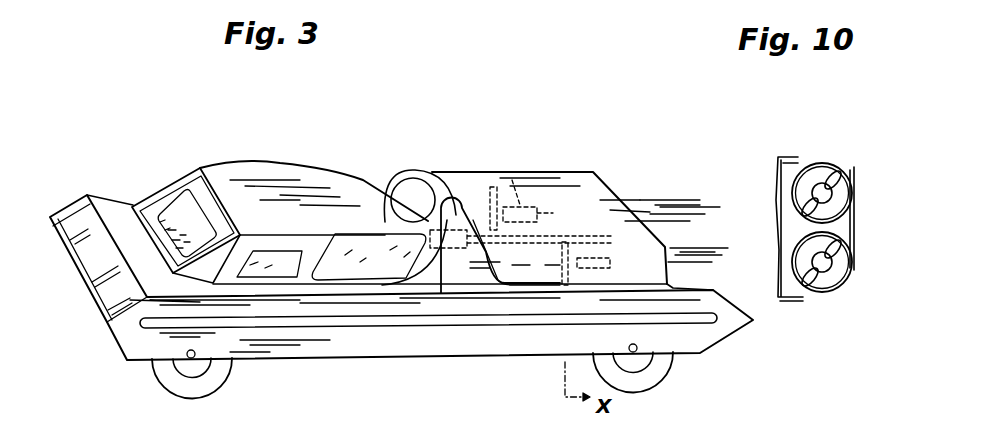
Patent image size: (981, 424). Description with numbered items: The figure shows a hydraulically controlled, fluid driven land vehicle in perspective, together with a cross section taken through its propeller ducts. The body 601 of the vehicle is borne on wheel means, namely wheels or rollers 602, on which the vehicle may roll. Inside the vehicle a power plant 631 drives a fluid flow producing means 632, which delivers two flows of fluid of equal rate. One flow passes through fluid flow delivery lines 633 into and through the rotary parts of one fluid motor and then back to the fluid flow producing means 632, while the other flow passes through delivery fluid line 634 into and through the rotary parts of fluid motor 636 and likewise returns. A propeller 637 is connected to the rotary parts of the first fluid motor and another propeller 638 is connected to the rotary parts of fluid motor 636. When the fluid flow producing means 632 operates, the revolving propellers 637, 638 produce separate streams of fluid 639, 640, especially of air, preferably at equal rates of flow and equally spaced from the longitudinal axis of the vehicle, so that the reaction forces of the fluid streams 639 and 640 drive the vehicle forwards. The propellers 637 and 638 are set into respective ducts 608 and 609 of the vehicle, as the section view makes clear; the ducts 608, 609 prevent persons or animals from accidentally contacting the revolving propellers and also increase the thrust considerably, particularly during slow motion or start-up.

In FIG. 3, the body 601 is at (308, 178).
In FIG. 3, the wheels or rollers 602 is at (207, 373).
In FIG. 3, the duct 608 is at (413, 190).
In FIG. 10, the duct 608 is at (807, 180).
In FIG. 3, the duct 609 is at (468, 270).
In FIG. 10, the duct 609 is at (838, 277).
In FIG. 3, the power plant 631 is at (441, 258).
In FIG. 3, the fluid flow producing means 632 is at (460, 200).
In FIG. 10, the fluid flow producing means 632 is at (826, 192).
In FIG. 3, the fluid flow delivery lines 633 is at (519, 268).
In FIG. 3, the delivery fluid line 634 is at (553, 268).
In FIG. 3, the fluid motor 636 is at (603, 258).
In FIG. 10, the fluid motor 636 is at (822, 273).
In FIG. 3, the propeller 637 is at (495, 187).
In FIG. 10, the propeller 637 is at (827, 180).
In FIG. 3, the propeller 638 is at (568, 242).
In FIG. 10, the propeller 638 is at (812, 282).
In FIG. 3, the stream of fluid 639 is at (673, 208).
In FIG. 3, the stream of fluid 640 is at (706, 247).